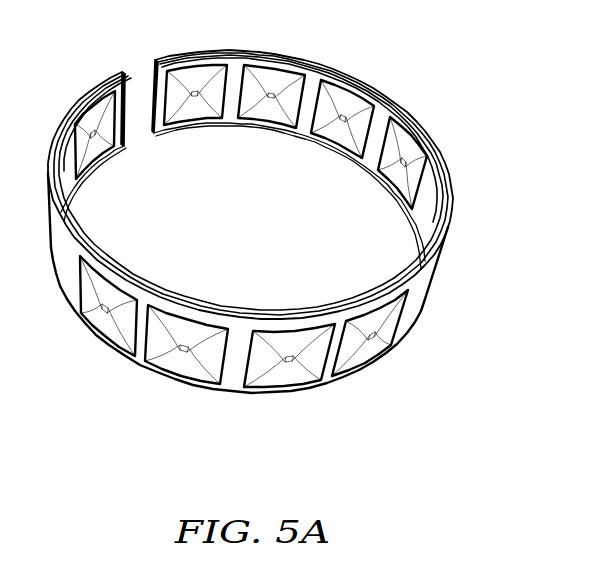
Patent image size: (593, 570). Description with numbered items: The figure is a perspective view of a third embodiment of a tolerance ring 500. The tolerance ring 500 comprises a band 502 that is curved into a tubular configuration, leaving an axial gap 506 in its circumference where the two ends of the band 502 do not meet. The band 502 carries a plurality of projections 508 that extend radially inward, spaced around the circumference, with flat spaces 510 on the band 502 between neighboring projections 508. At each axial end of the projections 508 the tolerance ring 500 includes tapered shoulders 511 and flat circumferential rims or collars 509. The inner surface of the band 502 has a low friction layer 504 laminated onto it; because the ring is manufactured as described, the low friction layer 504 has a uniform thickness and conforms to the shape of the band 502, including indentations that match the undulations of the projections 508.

The tolerance ring 500 is at (456, 67).
The band 502 is at (380, 350).
The low friction layer 504 is at (405, 272).
The axial gap 506 is at (140, 128).
The projections 508 is at (105, 142).
The flat circumferential rims or collars 509 is at (287, 390).
The flat spaces 510 is at (240, 375).
The tapered shoulders 511 is at (300, 373).